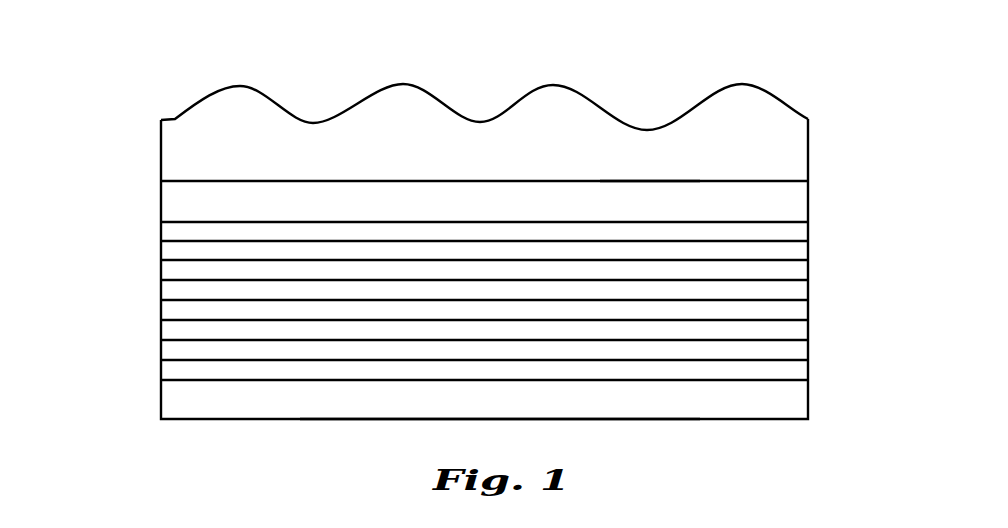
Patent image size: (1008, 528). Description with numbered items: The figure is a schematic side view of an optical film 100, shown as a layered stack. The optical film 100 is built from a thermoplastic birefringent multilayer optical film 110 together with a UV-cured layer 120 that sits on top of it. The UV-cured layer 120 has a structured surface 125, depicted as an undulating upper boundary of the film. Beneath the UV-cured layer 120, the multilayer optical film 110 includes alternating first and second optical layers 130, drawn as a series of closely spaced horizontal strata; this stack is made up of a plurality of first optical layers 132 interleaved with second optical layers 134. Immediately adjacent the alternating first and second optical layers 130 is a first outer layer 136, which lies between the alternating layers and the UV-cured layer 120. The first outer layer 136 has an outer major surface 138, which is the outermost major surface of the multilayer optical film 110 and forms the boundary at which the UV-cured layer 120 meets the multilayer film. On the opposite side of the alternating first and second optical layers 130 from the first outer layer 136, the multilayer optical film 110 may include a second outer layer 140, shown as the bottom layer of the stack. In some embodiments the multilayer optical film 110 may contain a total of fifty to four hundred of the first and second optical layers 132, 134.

The optical film 100 is at (452, 225).
The thermoplastic birefringent multilayer optical film 110 is at (452, 225).
The UV-cured layer 120 is at (445, 94).
The structured surface 125 is at (262, 88).
The alternating first and second optical layers 130 is at (483, 299).
The first optical layers 132 is at (798, 233).
The second optical layers 134 is at (800, 250).
The first outer layer 136 is at (799, 203).
The outer major surface 138 is at (646, 181).
The second outer layer 140 is at (790, 400).